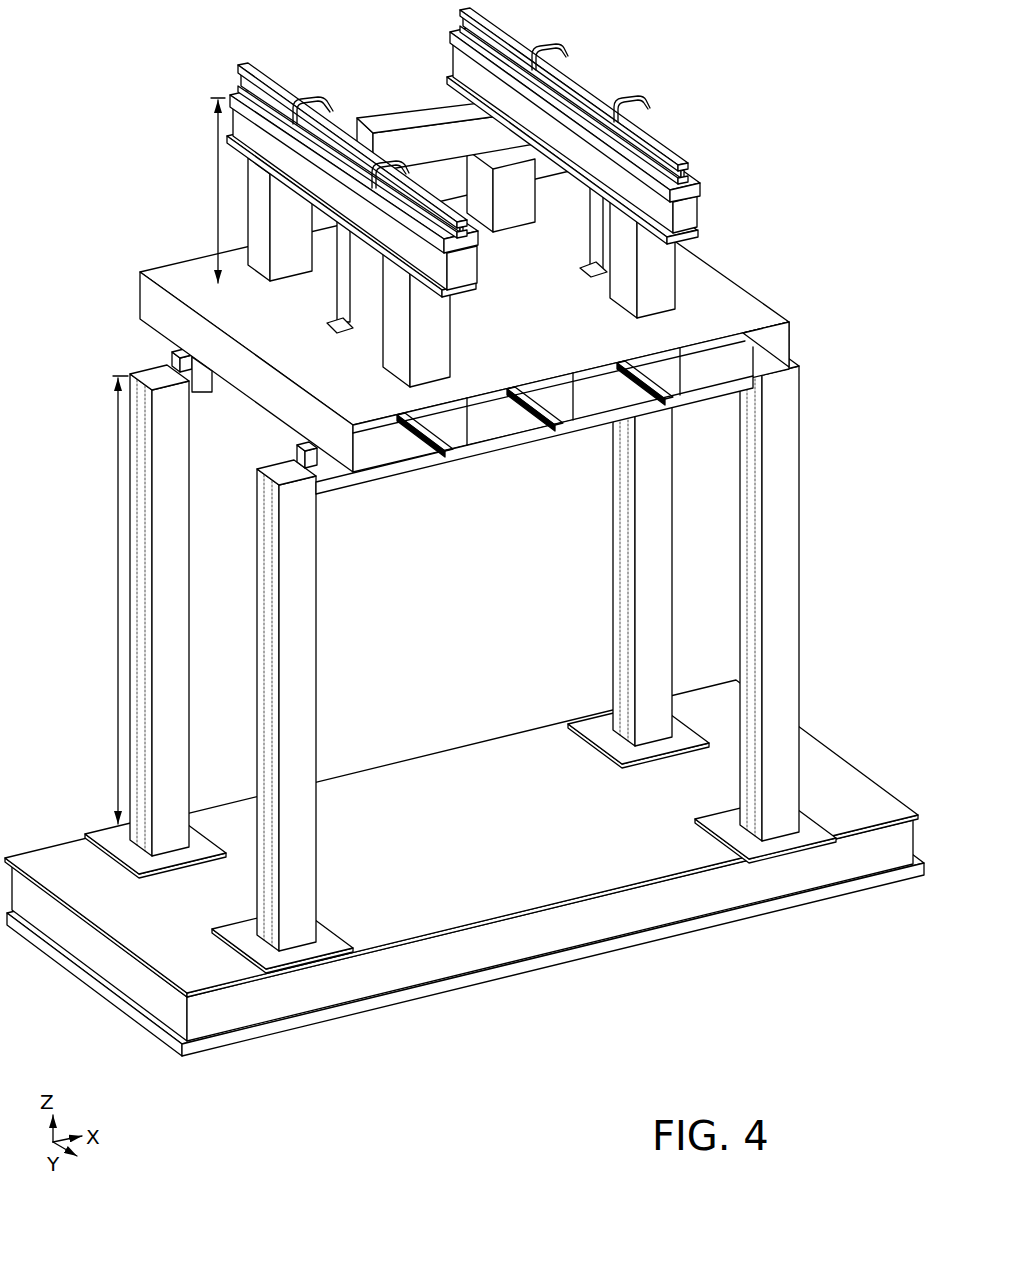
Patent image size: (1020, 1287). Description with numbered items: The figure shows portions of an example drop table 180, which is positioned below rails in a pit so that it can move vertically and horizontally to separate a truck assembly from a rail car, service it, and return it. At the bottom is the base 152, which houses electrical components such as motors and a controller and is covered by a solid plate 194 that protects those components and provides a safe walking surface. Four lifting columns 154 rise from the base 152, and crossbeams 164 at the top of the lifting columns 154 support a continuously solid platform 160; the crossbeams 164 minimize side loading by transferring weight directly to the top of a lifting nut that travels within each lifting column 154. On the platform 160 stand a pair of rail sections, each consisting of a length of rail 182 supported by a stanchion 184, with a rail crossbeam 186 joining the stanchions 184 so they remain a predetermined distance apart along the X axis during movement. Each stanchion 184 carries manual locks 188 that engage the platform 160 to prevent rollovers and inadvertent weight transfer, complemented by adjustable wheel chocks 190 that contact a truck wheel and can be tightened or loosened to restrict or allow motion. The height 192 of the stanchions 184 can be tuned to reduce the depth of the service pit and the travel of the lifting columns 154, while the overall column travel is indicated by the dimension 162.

The base 152 is at (96, 984).
The lifting columns 154 is at (190, 515).
The platform 160 is at (139, 290).
The column height 162 is at (118, 516).
The crossbeams 164 is at (212, 392).
The drop table 180 is at (375, 201).
The rail 182 is at (258, 73).
The stanchion 184 is at (260, 281).
The rail crossbeam 186 is at (494, 156).
The manual locks 188 is at (331, 331).
The adjustable wheel chocks 190 is at (318, 99).
The height 192 is at (216, 184).
The solid plate 194 is at (494, 842).